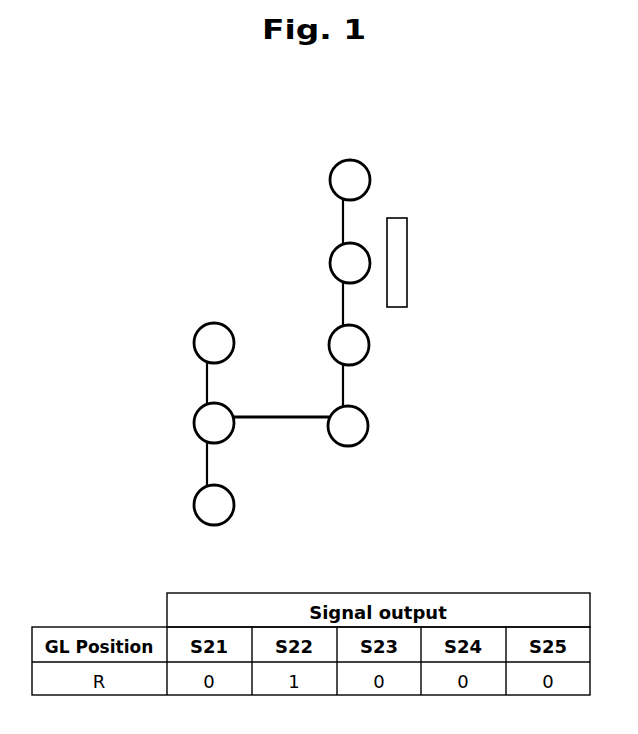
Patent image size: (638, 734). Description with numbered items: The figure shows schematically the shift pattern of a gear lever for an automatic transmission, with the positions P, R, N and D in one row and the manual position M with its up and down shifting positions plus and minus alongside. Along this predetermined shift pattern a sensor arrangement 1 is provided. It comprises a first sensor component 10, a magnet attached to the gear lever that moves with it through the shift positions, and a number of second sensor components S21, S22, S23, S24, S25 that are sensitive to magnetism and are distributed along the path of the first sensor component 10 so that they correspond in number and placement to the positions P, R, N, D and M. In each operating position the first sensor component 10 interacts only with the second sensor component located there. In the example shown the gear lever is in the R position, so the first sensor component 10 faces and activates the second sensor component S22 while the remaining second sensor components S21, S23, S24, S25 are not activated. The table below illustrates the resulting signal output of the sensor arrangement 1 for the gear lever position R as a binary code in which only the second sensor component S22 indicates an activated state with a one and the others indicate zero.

The sensor arrangement 1 is at (199, 215).
The first sensor component 10 is at (398, 240).
The second sensor component S21 is at (340, 164).
The second sensor component S22 is at (331, 258).
The second sensor component S23 is at (330, 346).
The second sensor component S24 is at (343, 446).
The second sensor component S25 is at (201, 442).